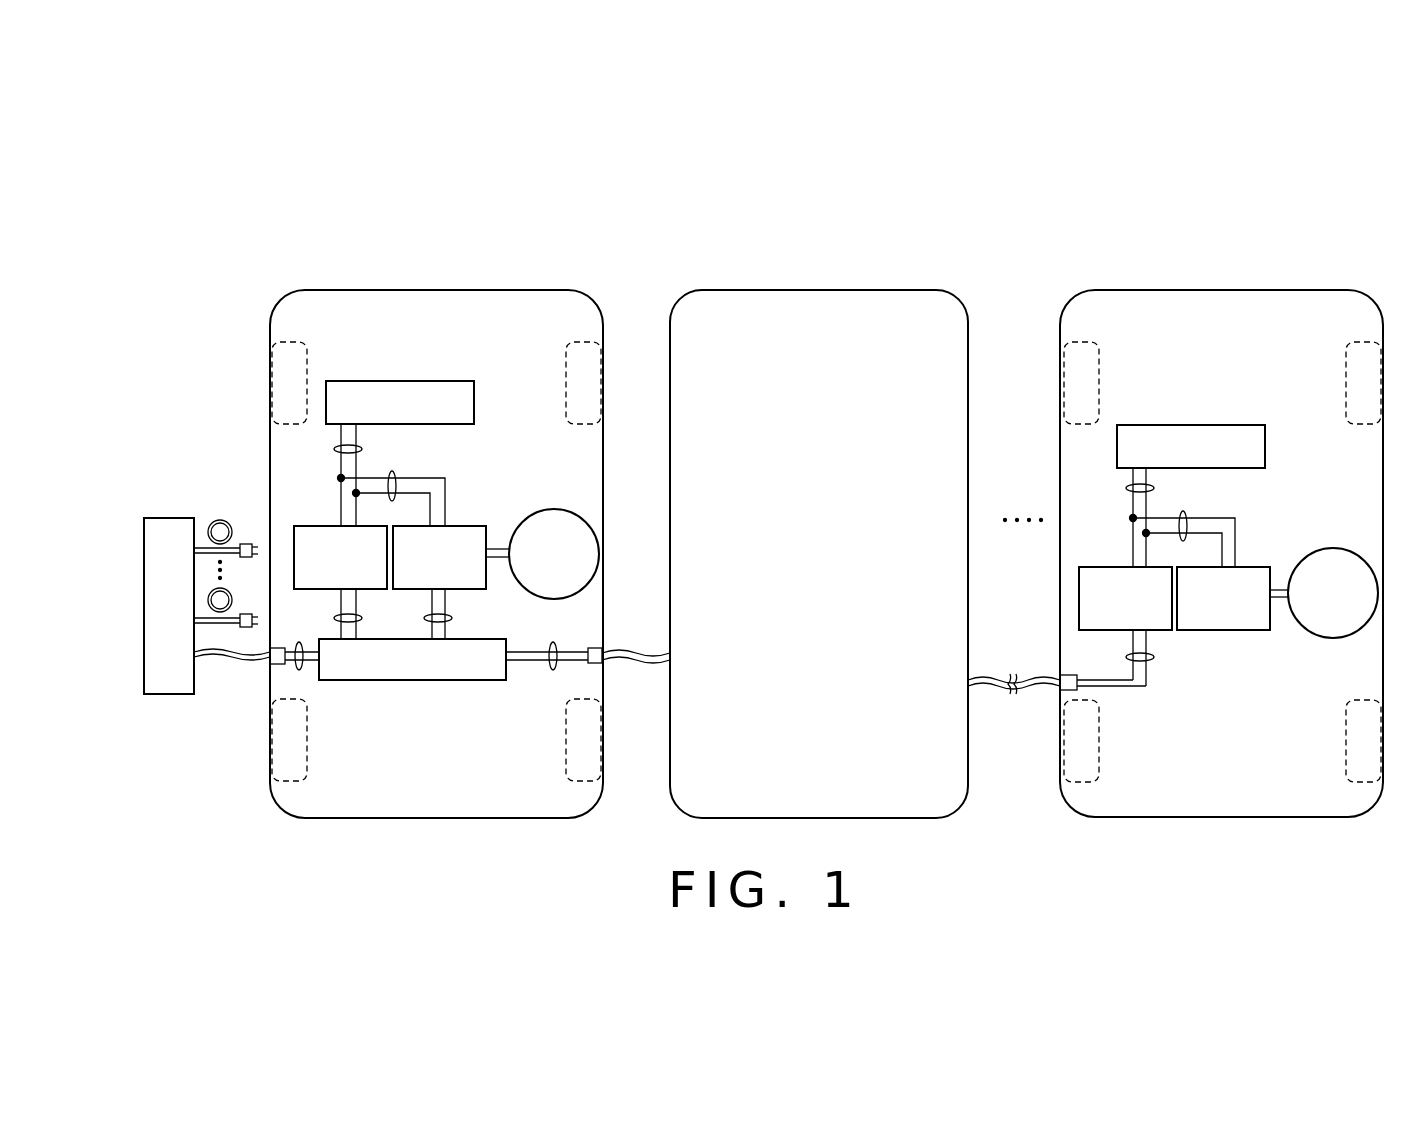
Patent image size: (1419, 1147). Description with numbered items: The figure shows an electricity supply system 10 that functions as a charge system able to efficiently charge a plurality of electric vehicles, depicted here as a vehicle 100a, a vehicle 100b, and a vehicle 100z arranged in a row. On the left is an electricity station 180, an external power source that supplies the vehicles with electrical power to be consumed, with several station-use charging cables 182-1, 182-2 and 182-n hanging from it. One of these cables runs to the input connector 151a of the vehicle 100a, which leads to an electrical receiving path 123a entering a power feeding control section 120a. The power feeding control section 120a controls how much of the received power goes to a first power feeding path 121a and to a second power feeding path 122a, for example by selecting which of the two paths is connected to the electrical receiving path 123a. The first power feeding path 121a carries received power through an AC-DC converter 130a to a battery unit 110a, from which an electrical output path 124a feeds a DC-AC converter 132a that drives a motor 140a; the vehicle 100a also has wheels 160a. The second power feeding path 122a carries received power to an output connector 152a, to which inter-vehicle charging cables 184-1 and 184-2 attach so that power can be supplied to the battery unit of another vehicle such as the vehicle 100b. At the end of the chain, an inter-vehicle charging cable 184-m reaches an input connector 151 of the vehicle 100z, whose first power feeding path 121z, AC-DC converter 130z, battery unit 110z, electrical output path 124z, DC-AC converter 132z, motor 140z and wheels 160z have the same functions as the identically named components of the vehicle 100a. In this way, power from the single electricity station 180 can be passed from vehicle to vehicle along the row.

The electricity supply system 10 is at (805, 205).
The vehicle 100a is at (450, 290).
The vehicle 100b is at (837, 290).
The vehicle 100z is at (1227, 290).
The battery unit 110a is at (405, 381).
The battery unit 110z is at (1195, 425).
The power feeding control section 120a is at (420, 680).
The first power feeding path 121a is at (325, 452).
The first power feeding path 121z is at (1118, 492).
The second power feeding path 122a is at (566, 637).
The electrical receiving path 123a is at (300, 670).
The electrical output path 124a is at (401, 476).
The electrical output path 124z is at (1194, 512).
The AC-DC converter 130a is at (305, 526).
The AC-DC converter 130z is at (1095, 567).
The DC-AC converter 132a is at (476, 526).
The DC-AC converter 132z is at (1262, 567).
The motor 140a is at (548, 510).
The motor 140z is at (1322, 638).
The input connector 151 is at (1063, 692).
The input connector 151a is at (282, 665).
The output connector 152a is at (592, 665).
The wheels 160a is at (284, 342).
The wheels 160z is at (1096, 342).
The electricity station 180 is at (162, 517).
The station-use charging cable 182-1 is at (208, 658).
The station-use charging cable 182-2 is at (228, 625).
The station-use charging cable 182-n is at (222, 512).
The inter-vehicle charging cable 184-1 is at (639, 653).
The inter-vehicle charging cable 184-2 is at (975, 678).
The inter-vehicle charging cable 184-m is at (1032, 680).